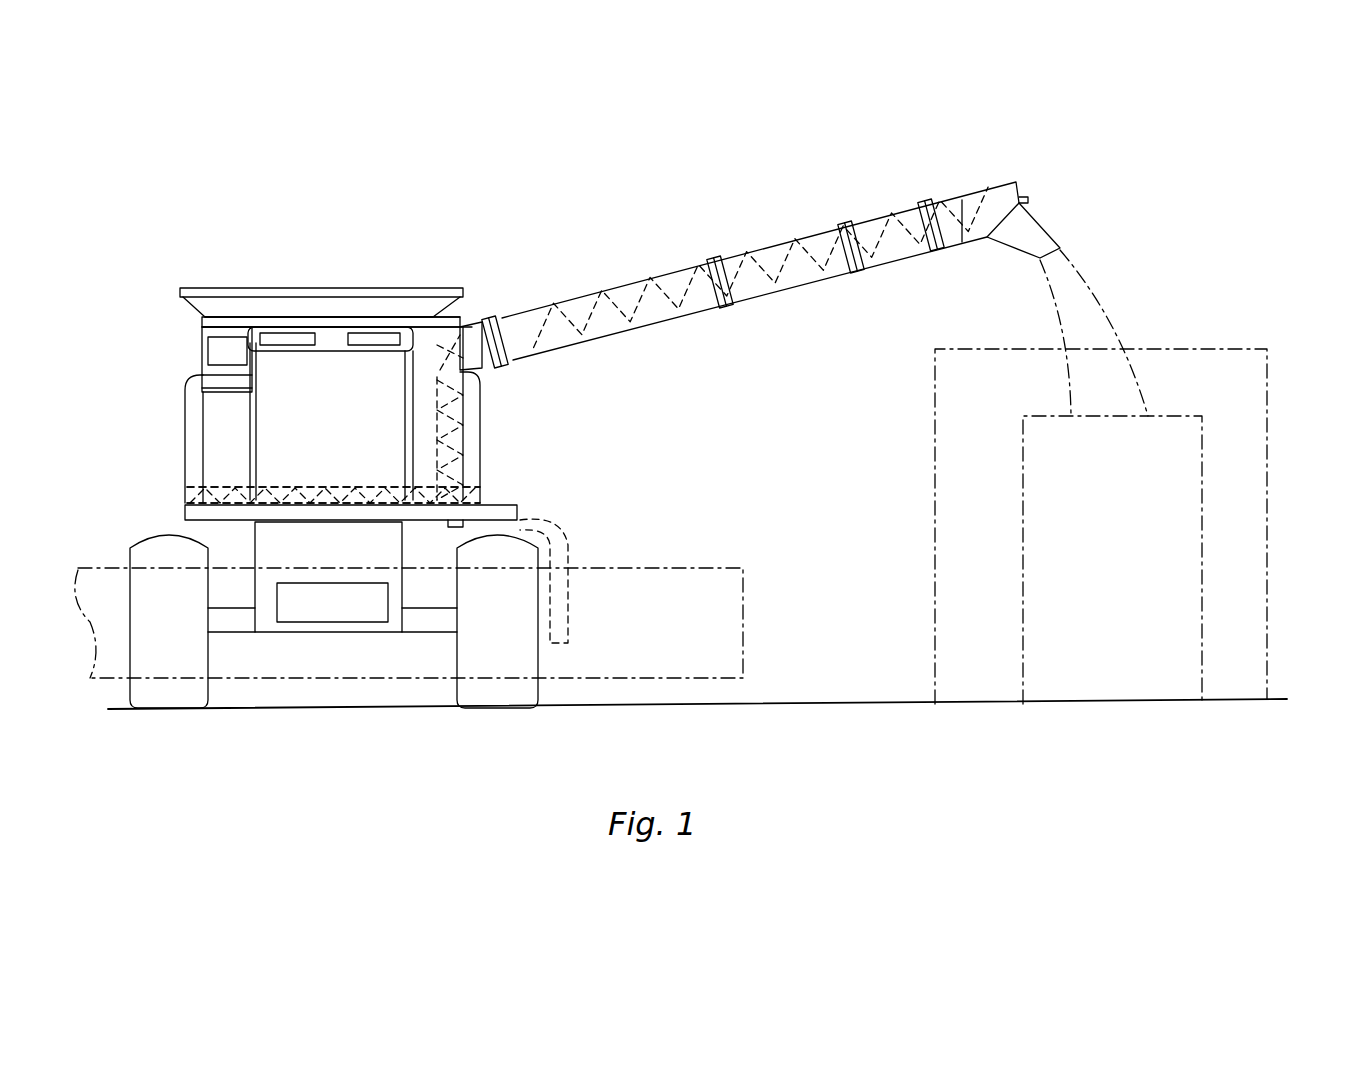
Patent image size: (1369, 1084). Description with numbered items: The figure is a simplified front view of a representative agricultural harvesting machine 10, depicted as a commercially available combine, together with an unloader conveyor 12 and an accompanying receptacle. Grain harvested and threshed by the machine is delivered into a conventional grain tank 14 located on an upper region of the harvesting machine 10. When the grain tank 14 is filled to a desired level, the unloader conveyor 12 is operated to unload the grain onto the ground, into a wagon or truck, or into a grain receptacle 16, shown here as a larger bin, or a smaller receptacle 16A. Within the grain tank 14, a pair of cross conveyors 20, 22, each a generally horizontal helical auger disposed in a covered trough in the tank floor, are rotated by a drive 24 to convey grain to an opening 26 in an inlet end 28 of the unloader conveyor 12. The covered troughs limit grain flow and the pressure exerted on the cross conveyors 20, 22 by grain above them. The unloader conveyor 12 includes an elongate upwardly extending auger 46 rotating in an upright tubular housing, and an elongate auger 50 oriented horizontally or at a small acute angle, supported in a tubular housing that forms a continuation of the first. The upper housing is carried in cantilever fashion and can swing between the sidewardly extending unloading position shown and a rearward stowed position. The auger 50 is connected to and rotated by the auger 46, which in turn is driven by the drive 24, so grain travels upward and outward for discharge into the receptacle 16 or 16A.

The agricultural harvesting machine 10 is at (384, 262).
The unloader conveyor 12 is at (615, 289).
The grain tank 14 is at (208, 287).
The grain receptacle 16 is at (1247, 347).
The smaller receptacle 16A is at (1202, 498).
The cross conveyor 20 is at (237, 487).
The cross conveyor 22 is at (333, 495).
The drive 24 is at (190, 488).
The opening 26 is at (445, 490).
The inlet end 28 is at (482, 492).
The auger 46 is at (472, 417).
The auger 50 is at (760, 267).